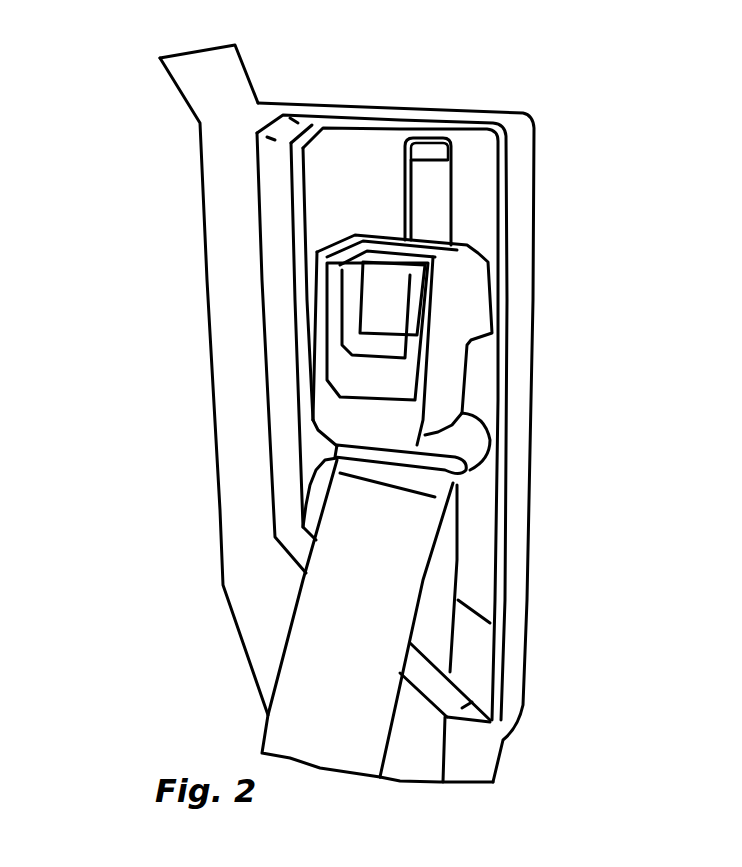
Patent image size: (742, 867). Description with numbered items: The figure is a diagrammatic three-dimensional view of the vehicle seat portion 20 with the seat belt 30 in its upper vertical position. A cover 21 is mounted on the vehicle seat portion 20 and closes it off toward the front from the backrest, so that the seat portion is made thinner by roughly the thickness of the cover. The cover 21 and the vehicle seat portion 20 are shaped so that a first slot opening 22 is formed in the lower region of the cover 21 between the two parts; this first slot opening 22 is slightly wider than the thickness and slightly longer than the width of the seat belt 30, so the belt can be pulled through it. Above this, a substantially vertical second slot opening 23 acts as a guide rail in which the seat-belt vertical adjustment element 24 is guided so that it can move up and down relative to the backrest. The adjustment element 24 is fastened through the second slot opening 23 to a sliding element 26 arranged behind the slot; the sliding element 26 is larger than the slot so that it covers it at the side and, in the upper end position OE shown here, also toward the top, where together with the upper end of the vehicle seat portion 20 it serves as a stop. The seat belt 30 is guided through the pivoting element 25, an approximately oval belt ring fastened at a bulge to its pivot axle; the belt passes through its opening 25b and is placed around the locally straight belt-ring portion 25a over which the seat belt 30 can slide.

The vehicle seat portion 20 is at (467, 112).
The cover 21 is at (472, 700).
The first slot opening 22 is at (435, 663).
The second slot opening 23 is at (440, 150).
The seat-belt vertical adjustment element 24 is at (467, 305).
The pivoting element 25 is at (485, 452).
The belt-ring portion 25a is at (473, 513).
The opening 25b is at (480, 430).
The upper end position OE is at (485, 467).
The sliding element 26 is at (435, 215).
The seat belt 30 is at (453, 560).